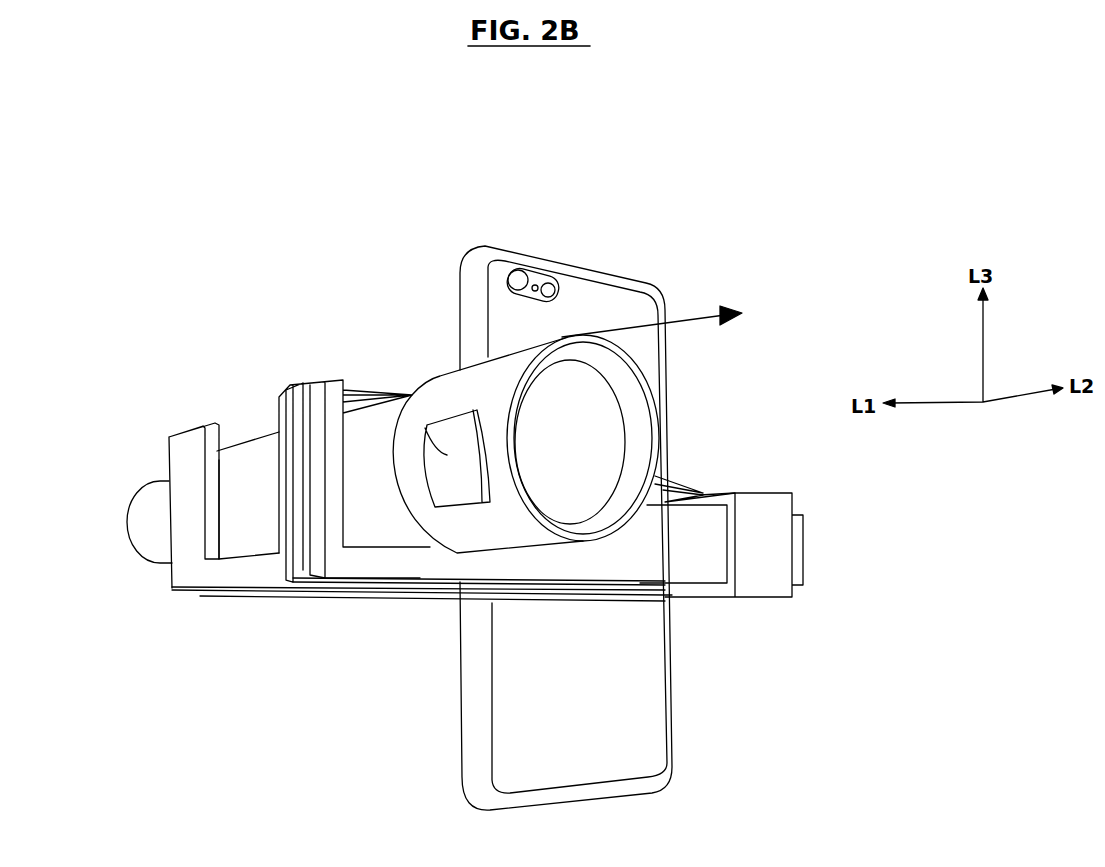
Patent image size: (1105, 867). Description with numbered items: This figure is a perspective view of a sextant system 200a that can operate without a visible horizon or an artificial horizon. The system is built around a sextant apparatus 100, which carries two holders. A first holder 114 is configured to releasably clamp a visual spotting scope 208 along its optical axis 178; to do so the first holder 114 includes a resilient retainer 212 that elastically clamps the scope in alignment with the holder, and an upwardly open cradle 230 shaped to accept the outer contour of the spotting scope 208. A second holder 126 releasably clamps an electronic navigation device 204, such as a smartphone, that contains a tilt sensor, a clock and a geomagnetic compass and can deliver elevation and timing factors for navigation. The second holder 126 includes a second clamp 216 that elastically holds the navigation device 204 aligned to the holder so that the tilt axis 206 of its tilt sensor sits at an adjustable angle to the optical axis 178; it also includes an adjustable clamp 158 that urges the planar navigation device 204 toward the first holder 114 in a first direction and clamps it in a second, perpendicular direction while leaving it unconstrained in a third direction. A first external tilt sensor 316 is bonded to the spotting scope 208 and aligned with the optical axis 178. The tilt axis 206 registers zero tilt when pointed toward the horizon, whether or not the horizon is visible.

The sextant system 200a is at (360, 258).
The electronic navigation device 204 is at (615, 302).
The tilt axis 206 is at (697, 318).
The optical axis 178 is at (577, 443).
The second clamp 216 is at (737, 493).
The adjustable clamp 158 is at (777, 520).
The second holder 126 is at (697, 568).
The sextant apparatus 100 is at (478, 570).
The first holder 114 is at (247, 570).
The upwardly open cradle 230 is at (218, 388).
The visual spotting scope 208 is at (257, 453).
The resilient retainer 212 is at (372, 390).
The first external tilt sensor 316 is at (423, 432).